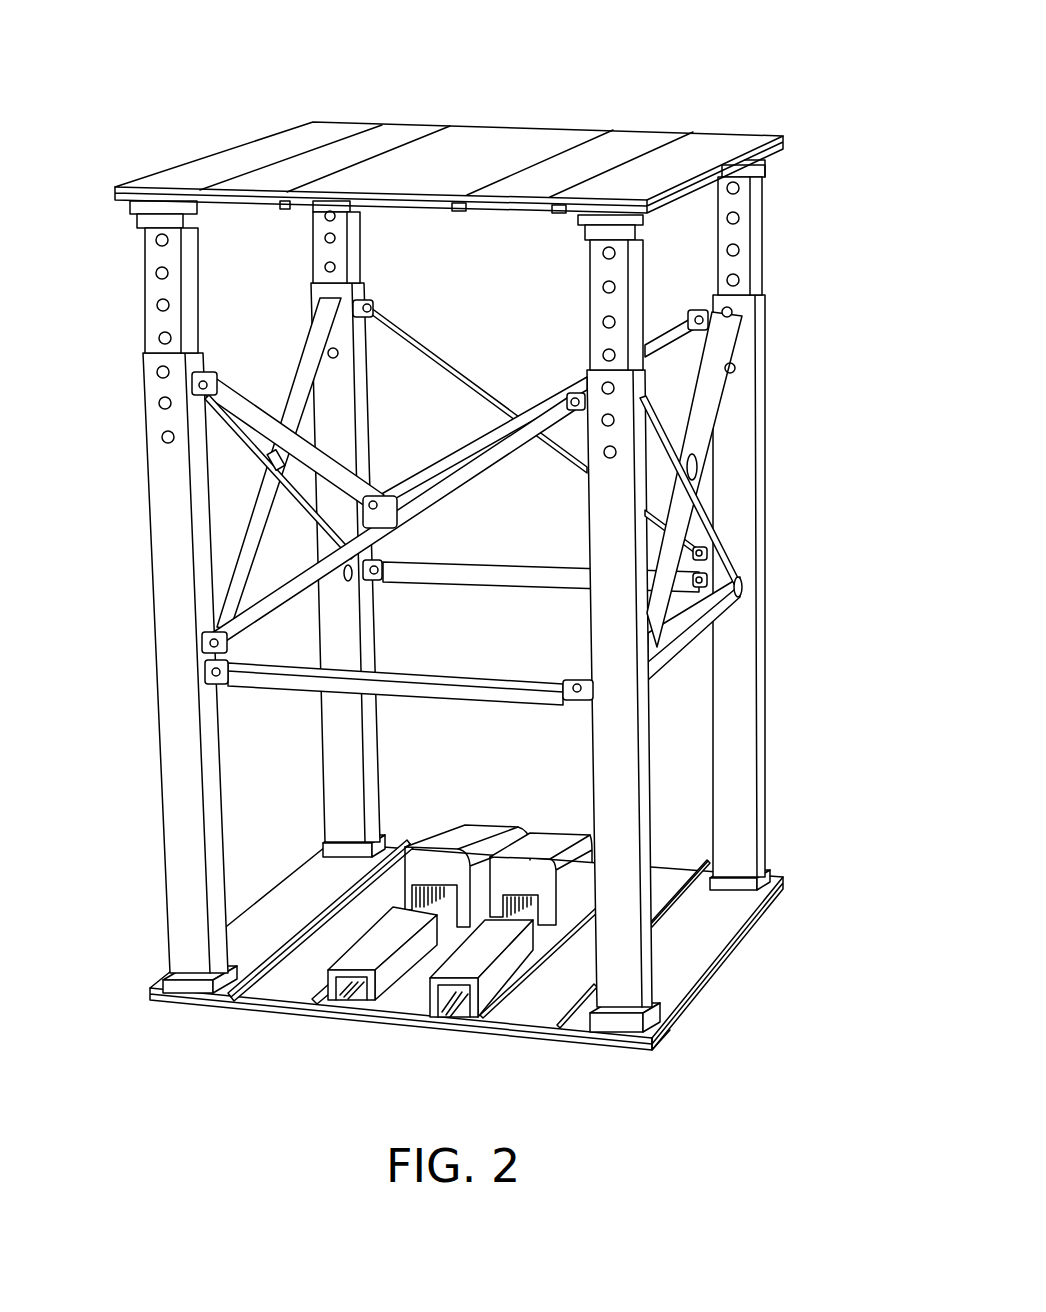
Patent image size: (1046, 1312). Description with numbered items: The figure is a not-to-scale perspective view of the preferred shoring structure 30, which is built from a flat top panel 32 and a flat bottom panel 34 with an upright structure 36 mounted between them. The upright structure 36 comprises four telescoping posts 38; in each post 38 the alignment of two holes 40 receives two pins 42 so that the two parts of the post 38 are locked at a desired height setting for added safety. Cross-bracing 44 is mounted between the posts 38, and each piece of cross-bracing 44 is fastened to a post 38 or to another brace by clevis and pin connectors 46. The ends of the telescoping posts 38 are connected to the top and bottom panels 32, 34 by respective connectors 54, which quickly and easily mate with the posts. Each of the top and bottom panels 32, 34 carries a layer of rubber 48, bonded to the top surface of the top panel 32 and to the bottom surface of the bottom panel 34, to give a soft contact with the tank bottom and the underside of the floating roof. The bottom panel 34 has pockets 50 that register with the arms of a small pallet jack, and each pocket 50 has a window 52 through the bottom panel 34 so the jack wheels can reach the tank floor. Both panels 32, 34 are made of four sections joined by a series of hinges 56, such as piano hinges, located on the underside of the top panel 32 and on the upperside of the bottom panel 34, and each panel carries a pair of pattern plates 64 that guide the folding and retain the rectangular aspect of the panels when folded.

The shoring structure 30 is at (612, 95).
The top panel 32 is at (280, 148).
The bottom panel 34 is at (718, 928).
The upright structure 36 is at (117, 740).
The telescoping post 38 is at (762, 328).
The hole 40 is at (157, 273).
The pin 42 is at (158, 372).
The cross-bracing 44 is at (457, 362).
The clevis and pin connector 46 is at (208, 377).
The layer of rubber 48 is at (747, 158).
The pocket 50 is at (500, 850).
The window 52 is at (338, 992).
The connector 54 is at (138, 204).
The hinge 56 is at (288, 210).
The pattern plate 64 is at (432, 845).